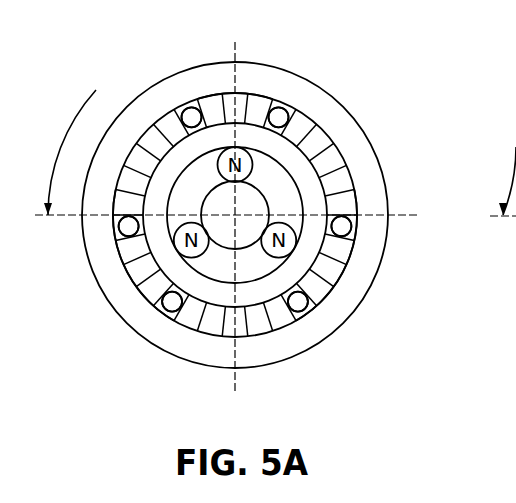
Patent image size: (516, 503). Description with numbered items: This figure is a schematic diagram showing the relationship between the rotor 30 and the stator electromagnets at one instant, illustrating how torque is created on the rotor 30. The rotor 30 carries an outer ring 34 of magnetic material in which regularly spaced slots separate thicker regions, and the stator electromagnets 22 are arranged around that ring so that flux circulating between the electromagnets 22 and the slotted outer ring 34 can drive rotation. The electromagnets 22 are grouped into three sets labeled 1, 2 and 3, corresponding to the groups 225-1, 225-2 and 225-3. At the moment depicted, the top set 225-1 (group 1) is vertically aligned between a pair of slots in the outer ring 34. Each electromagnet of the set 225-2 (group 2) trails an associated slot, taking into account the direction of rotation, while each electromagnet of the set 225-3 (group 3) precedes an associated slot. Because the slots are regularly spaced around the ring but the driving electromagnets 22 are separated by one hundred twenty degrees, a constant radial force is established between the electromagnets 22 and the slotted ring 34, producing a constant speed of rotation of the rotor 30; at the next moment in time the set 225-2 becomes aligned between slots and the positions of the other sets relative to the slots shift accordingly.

The first electromagnet set 1 is at (234, 89).
The second electromagnet set 2 is at (133, 262).
The third electromagnet set 3 is at (336, 262).
The electromagnet pole 22 is at (284, 111).
The rotor 30 is at (349, 294).
The outer ring 34 is at (167, 125).
The first electromagnet set 225-1 is at (220, 75).
The second electromagnet set 225-2 is at (107, 268).
The third electromagnet set 225-3 is at (352, 243).